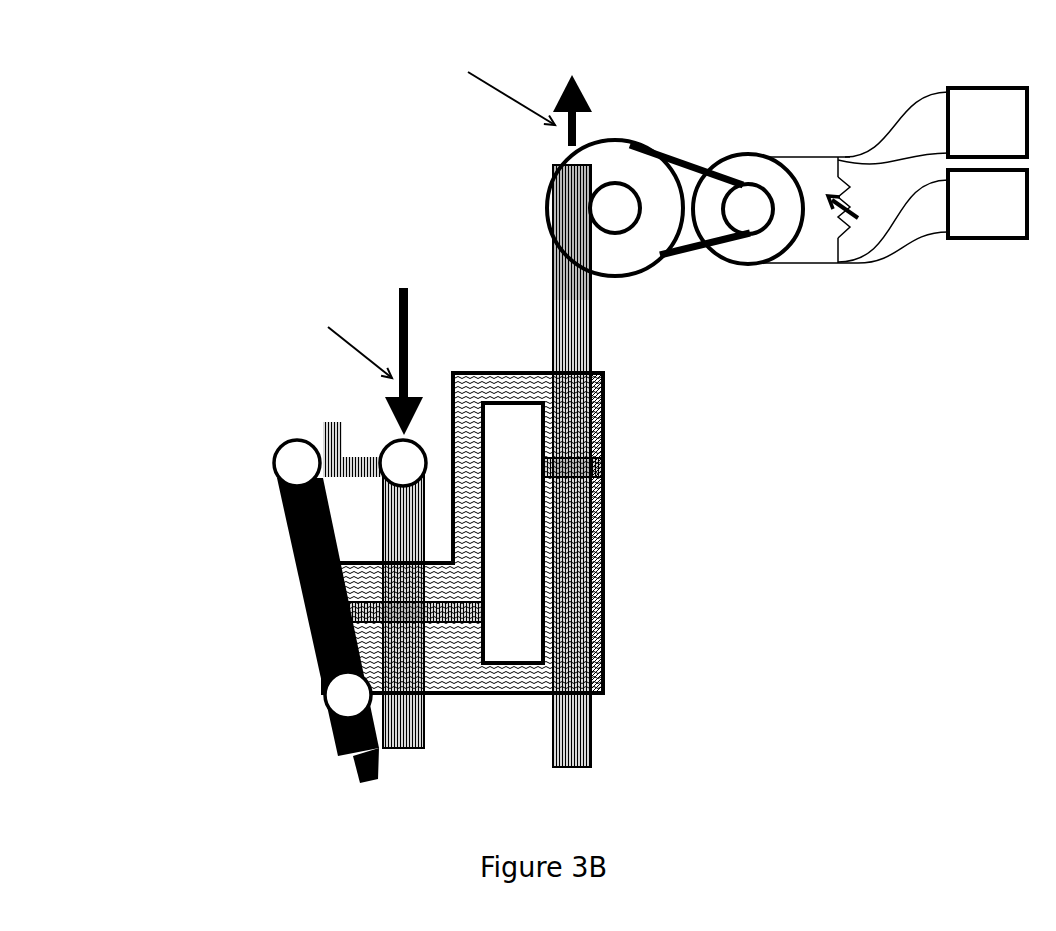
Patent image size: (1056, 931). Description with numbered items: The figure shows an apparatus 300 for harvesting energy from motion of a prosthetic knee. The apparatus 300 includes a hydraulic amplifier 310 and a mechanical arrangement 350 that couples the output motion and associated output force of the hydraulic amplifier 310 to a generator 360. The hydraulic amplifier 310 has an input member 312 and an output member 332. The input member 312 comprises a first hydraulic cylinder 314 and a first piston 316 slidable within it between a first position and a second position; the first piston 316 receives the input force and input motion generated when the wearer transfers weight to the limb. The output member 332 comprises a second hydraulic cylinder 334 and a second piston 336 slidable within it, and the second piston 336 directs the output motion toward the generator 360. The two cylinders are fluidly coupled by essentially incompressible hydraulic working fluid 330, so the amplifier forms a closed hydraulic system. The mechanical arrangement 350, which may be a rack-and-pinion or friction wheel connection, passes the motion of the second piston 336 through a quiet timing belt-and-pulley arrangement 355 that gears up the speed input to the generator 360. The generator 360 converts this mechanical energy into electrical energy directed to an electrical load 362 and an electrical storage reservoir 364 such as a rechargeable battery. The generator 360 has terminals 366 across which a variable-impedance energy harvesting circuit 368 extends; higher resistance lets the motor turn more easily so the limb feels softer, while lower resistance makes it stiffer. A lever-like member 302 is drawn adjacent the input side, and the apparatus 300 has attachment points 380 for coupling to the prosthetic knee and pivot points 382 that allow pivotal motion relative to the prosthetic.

The apparatus 300 is at (278, 173).
The lever arm 302 is at (283, 530).
The hydraulic amplifier 310 is at (482, 322).
The input member 312 is at (262, 658).
The first hydraulic cylinder 314 is at (452, 698).
The first piston 316 is at (410, 516).
The hydraulic working fluid 330 is at (600, 510).
The output member 332 is at (675, 560).
The second hydraulic cylinder 334 is at (605, 557).
The second piston 336 is at (570, 253).
The mechanical arrangement 350 is at (592, 228).
The timing belt-and-pulley arrangement 355 is at (688, 157).
The generator 360 is at (750, 264).
The electrical load 362 is at (987, 122).
The electrical storage reservoir 364 is at (987, 204).
The terminals 366 is at (801, 155).
The variable-impedance energy harvesting circuit 368 is at (848, 237).
The attachment points 380 is at (318, 415).
The pivot points 382 is at (298, 463).